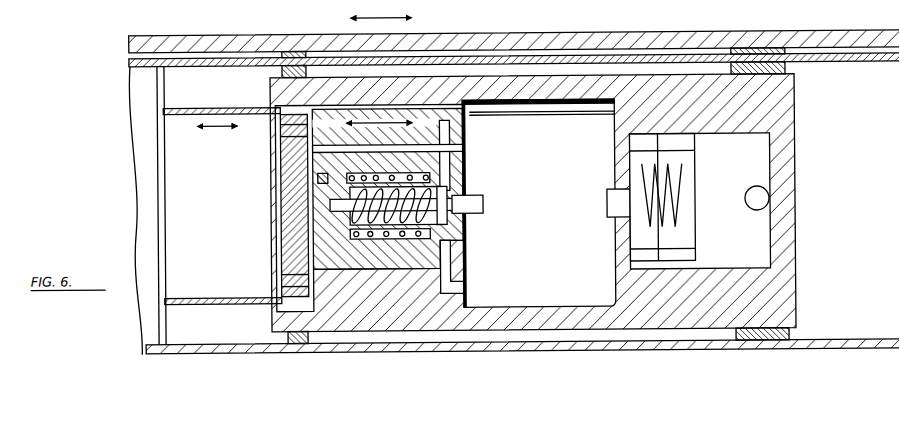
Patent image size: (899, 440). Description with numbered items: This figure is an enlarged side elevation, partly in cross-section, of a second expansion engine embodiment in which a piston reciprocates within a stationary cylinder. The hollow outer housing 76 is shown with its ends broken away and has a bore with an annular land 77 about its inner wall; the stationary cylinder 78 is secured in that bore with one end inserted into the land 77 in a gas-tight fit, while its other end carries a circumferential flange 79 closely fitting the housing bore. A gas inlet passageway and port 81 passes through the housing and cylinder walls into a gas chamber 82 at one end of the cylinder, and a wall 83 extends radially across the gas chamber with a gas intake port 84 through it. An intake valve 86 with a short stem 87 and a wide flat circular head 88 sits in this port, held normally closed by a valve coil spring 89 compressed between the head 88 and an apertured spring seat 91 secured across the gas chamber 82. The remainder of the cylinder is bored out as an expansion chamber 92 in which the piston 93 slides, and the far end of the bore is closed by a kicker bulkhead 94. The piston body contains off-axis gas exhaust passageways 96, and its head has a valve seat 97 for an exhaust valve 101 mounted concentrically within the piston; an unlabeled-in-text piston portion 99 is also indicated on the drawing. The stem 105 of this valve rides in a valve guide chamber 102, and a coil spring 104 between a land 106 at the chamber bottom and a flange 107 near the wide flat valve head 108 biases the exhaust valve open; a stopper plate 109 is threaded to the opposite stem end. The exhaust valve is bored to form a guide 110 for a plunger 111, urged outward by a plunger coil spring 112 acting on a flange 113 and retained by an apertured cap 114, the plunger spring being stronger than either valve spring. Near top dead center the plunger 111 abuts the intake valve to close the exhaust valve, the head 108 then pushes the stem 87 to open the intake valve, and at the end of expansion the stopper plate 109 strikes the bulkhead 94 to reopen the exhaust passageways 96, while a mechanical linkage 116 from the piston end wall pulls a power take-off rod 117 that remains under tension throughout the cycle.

The outer housing 76 is at (821, 41).
The annular land 77 is at (283, 70).
The stationary cylinder 78 is at (796, 158).
The flange 79 is at (786, 67).
The gas inlet passageway and port 81 is at (772, 198).
The gas chamber 82 is at (735, 246).
The wall 83 is at (628, 238).
The gas intake port 84 is at (614, 220).
The intake valve 86 is at (611, 186).
The valve stem 87 is at (607, 205).
The valve head 88 is at (660, 157).
The valve coil spring 89 is at (630, 250).
The apertured spring seat 91 is at (688, 180).
The expansion chamber 92 is at (531, 271).
The piston 93 is at (468, 302).
The kicker bulkhead 94 is at (281, 160).
The gas exhaust passageways 96 is at (440, 151).
The valve seat 97 is at (440, 128).
The piston body 99 is at (283, 212).
The exhaust valve 101 is at (472, 233).
The valve guide chamber 102 is at (405, 240).
The exhaust valve coil spring 104 is at (386, 172).
The valve stem 105 is at (432, 246).
The land 106 is at (300, 178).
The flange 107 is at (452, 180).
The valve head 108 is at (456, 258).
The stopper plate 109 is at (300, 240).
The guide 110 is at (362, 244).
The plunger 111 is at (483, 210).
The plunger coil spring 112 is at (448, 188).
The flange 113 is at (467, 222).
The apertured cap 114 is at (462, 196).
The mechanical linkage 116 is at (159, 103).
The power take-off rod 117 is at (238, 62).